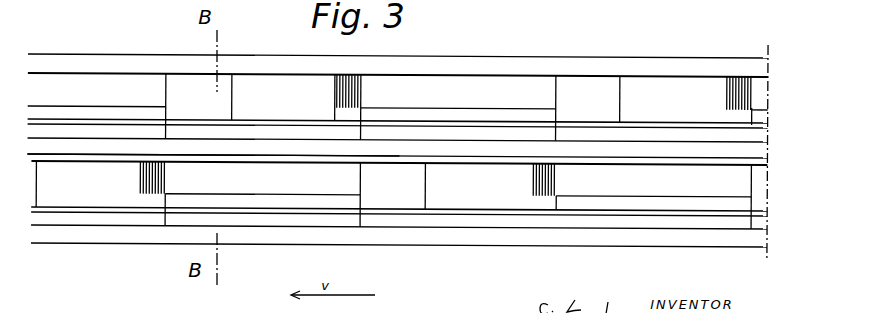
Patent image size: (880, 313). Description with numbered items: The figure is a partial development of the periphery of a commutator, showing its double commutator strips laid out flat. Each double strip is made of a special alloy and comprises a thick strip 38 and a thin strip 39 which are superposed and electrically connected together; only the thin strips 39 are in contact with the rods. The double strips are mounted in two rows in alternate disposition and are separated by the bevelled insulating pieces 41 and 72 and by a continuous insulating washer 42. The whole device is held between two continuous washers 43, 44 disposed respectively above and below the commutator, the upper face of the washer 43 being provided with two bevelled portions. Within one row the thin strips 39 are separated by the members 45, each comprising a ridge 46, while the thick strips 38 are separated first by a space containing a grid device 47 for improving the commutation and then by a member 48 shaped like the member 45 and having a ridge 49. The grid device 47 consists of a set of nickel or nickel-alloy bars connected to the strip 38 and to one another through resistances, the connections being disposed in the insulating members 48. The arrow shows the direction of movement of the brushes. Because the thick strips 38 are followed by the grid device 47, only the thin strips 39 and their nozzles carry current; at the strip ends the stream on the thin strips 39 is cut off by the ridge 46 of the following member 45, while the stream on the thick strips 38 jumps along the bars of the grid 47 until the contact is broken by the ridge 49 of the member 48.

The thick strip 38 is at (62, 85).
The thin strip 39 is at (113, 132).
The bevelled insulating piece 41 is at (449, 115).
The insulating washer 42 is at (270, 125).
The continuous washer 43 is at (603, 65).
The continuous washer 44 is at (452, 237).
The member 45 is at (247, 128).
The ridge 46 is at (365, 133).
The grid device 47 is at (337, 90).
The insulating member 48 is at (178, 90).
The ridge 49 is at (335, 112).
The bevelled insulating piece 72 is at (412, 148).